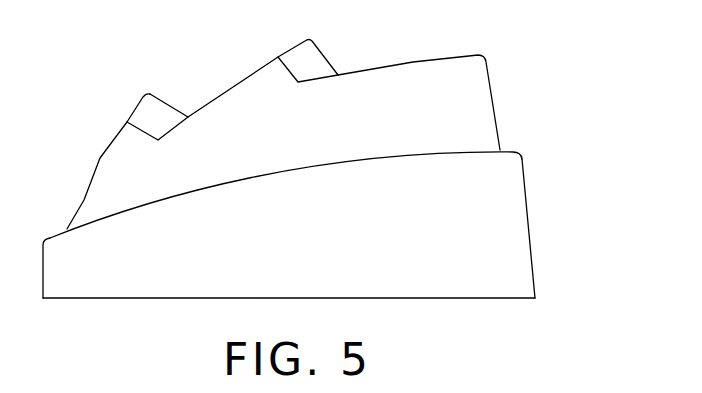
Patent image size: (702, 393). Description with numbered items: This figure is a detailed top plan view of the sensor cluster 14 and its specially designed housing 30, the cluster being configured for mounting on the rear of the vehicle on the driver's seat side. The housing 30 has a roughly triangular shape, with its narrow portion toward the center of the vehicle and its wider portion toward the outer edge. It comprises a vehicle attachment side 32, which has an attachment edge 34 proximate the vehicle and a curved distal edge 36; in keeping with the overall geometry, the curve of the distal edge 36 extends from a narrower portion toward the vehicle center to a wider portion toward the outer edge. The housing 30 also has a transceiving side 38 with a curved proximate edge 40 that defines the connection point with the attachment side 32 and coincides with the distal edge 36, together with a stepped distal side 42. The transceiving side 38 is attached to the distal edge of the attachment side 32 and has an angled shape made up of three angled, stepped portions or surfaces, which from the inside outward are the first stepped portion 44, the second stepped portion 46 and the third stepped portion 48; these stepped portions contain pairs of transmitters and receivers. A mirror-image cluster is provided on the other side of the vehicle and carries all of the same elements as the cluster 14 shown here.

The sensor cluster 14 is at (511, 111).
The housing 30 is at (523, 160).
The vehicle attachment side 32 is at (407, 275).
The attachment edge 34 is at (157, 300).
The curved distal edge 36 is at (123, 212).
The transceiving side 38 is at (130, 178).
The curved proximate edge 40 is at (382, 158).
The stepped distal side 42 is at (105, 125).
The first angled stepped portion 44 is at (133, 133).
The second angled stepped portion 46 is at (252, 103).
The third angled stepped portion 48 is at (363, 92).